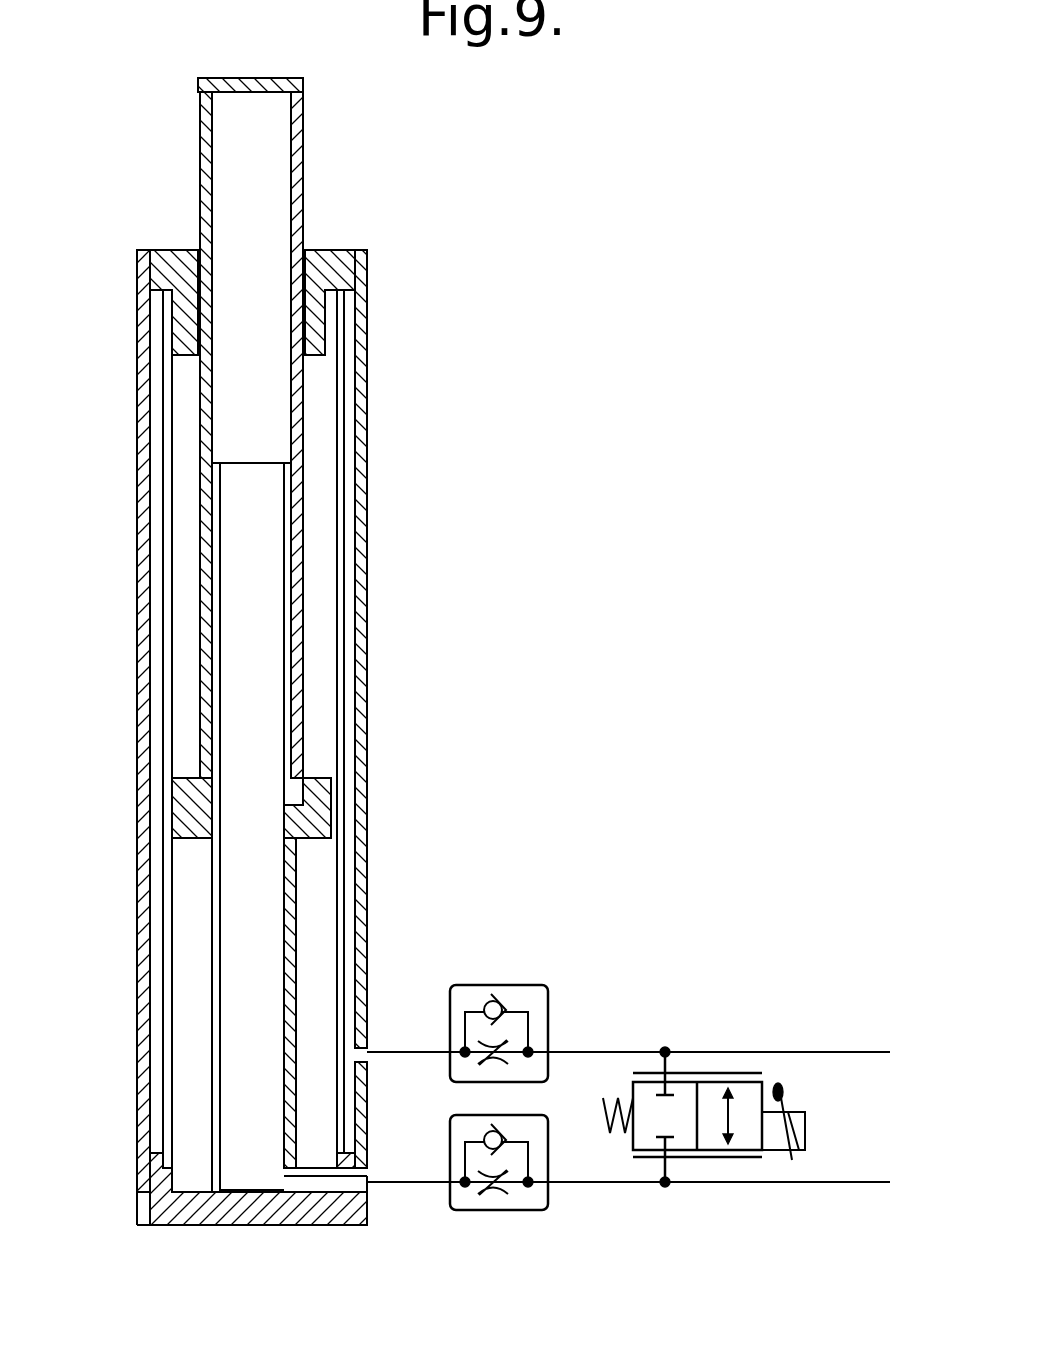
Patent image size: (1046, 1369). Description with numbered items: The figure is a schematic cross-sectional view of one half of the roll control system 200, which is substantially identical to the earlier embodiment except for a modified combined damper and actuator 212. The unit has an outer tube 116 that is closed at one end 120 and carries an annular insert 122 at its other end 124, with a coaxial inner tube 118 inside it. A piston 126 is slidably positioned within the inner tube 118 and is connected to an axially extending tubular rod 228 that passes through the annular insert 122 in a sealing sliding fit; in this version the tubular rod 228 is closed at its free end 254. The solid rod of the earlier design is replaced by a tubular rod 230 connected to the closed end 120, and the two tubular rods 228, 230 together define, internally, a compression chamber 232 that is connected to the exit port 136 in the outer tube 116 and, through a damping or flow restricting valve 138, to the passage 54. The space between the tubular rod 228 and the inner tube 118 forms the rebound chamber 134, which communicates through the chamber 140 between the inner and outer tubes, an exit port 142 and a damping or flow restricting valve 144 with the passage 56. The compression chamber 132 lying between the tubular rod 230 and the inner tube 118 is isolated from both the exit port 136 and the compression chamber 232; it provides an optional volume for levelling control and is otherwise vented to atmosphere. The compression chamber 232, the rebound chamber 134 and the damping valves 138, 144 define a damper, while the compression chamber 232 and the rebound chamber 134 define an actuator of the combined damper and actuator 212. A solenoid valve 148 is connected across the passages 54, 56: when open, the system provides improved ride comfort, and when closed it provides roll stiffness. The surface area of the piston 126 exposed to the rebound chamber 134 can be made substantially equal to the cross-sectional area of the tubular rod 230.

The roll control system 200 is at (530, 375).
The outer tube 116 is at (365, 600).
The combined damper and actuator 212 is at (373, 513).
The closed end 120 is at (292, 1205).
The exit port 136 is at (372, 1186).
The exit port 142 is at (368, 1052).
The inner tube 118 is at (343, 685).
The chamber 140 is at (355, 765).
The annular insert 122 is at (338, 270).
The other end 124 is at (360, 250).
The tubular rod 228 is at (200, 178).
The free end 254 is at (250, 78).
The rebound chamber 134 is at (318, 440).
The compression chamber 132 is at (187, 993).
The piston 126 is at (325, 822).
The tubular rod 230 is at (213, 1097).
The compression chamber 232 is at (265, 952).
The passage 56 is at (762, 1050).
The passage 54 is at (628, 1183).
The damping valve 144 is at (552, 998).
The damping valve 138 is at (515, 1212).
The solenoid valve 148 is at (752, 1135).